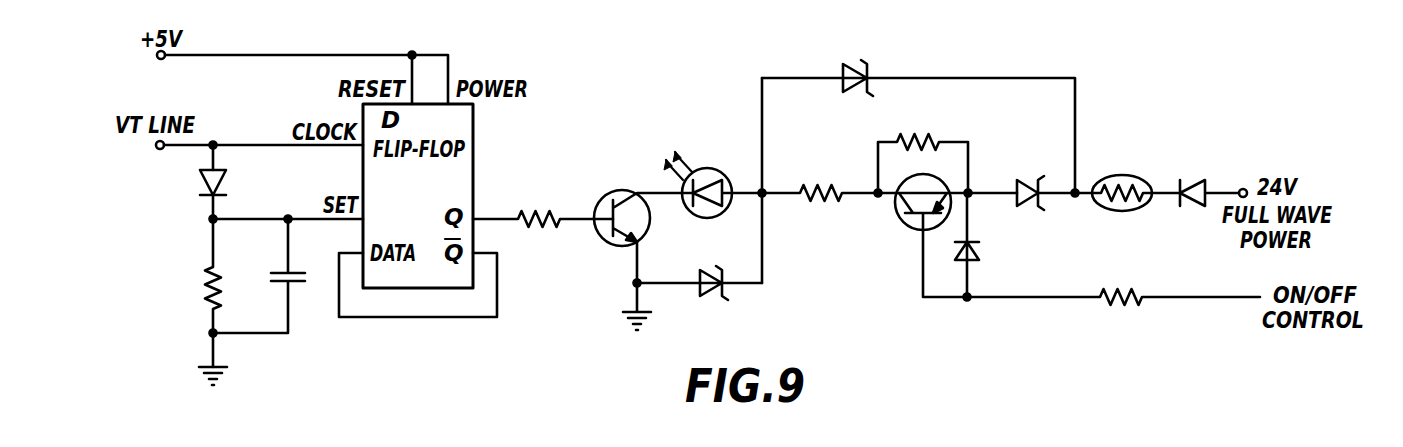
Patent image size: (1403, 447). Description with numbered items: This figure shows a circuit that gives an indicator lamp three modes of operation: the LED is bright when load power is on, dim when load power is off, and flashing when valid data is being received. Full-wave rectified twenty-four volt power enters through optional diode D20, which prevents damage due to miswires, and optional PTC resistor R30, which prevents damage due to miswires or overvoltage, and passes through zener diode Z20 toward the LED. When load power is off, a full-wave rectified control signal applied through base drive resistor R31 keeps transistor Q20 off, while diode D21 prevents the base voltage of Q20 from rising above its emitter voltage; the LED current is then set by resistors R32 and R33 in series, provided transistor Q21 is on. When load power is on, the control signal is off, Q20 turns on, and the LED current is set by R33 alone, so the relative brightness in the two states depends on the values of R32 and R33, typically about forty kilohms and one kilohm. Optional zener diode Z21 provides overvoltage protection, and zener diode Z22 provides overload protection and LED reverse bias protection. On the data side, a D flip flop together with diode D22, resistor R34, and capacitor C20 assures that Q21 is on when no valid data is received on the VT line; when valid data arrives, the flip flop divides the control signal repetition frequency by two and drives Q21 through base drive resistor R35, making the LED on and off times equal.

The diode D22 is at (237, 192).
The resistor R34 is at (190, 293).
The capacitor C20 is at (259, 276).
The base drive resistor R35 is at (543, 204).
The transistor Q21 is at (636, 236).
The element LED is at (713, 179).
The zener diode Z22 is at (707, 291).
The zener diode Z21 is at (918, 122).
The resistor R33 is at (820, 179).
The resistor R32 is at (923, 150).
The transistor Q20 is at (942, 235).
The zener diode Z20 is at (1049, 178).
The diode D21 is at (989, 245).
The base drive resistor R31 is at (1113, 282).
The PTC resistor R30 is at (1136, 179).
The diode D20 is at (1209, 177).